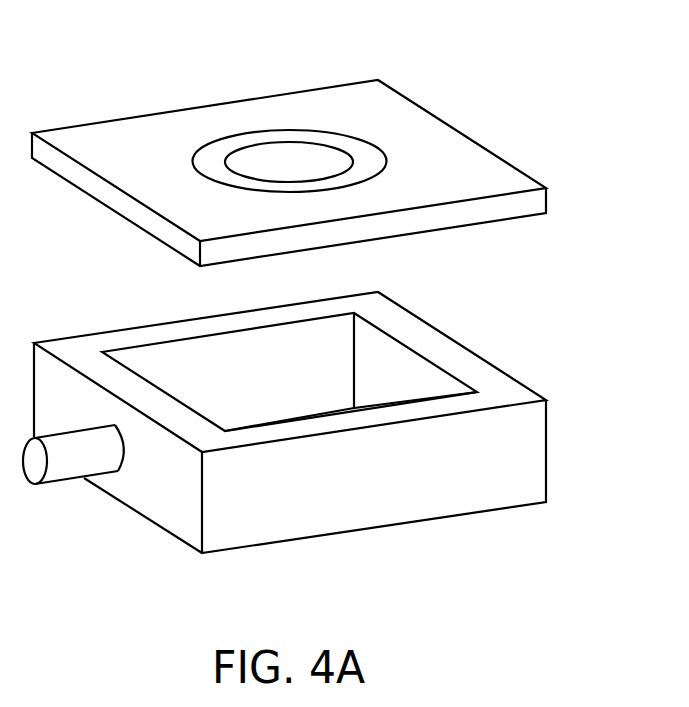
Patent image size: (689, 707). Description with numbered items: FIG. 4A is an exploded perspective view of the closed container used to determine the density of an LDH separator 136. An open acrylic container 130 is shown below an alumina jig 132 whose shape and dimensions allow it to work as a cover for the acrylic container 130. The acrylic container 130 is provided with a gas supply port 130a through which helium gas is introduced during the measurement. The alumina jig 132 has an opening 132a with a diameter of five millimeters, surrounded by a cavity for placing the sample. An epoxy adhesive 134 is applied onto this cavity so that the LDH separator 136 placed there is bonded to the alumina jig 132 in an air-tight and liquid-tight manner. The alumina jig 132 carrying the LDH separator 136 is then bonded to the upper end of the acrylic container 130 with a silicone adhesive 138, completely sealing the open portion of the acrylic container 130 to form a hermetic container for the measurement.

The acrylic container 130 is at (522, 462).
The gas supply port 130a is at (70, 462).
The alumina jig 132 is at (472, 172).
The opening 132a is at (243, 147).
The epoxy adhesive 134 is at (365, 155).
The LDH separator 136 is at (299, 155).
The silicone adhesive 138 is at (447, 355).